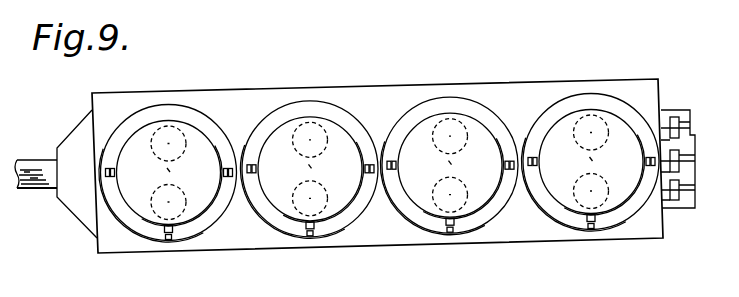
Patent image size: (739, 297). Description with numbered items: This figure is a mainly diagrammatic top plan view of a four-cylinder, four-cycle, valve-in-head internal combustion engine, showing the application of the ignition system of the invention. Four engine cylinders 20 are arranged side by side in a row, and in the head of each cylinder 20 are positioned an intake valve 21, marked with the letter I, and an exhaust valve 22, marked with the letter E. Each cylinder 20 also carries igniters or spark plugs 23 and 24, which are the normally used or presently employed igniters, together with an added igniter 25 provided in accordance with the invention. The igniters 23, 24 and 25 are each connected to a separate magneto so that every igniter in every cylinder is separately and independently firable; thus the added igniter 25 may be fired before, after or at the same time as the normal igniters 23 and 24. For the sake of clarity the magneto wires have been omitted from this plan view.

The internal combustion engine cylinder 20 is at (200, 130).
The intake valve 21 is at (155, 225).
The exhaust valve 22 is at (170, 127).
The igniter 23 is at (113, 176).
The igniter 24 is at (230, 176).
The added igniter 25 is at (167, 238).